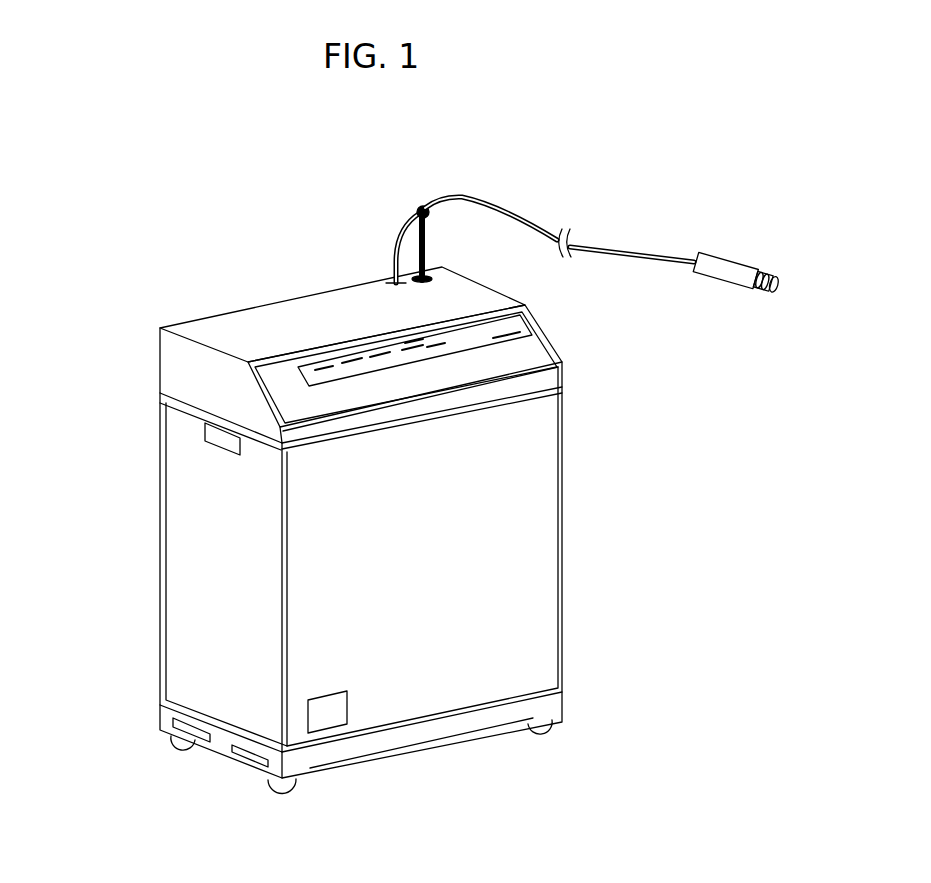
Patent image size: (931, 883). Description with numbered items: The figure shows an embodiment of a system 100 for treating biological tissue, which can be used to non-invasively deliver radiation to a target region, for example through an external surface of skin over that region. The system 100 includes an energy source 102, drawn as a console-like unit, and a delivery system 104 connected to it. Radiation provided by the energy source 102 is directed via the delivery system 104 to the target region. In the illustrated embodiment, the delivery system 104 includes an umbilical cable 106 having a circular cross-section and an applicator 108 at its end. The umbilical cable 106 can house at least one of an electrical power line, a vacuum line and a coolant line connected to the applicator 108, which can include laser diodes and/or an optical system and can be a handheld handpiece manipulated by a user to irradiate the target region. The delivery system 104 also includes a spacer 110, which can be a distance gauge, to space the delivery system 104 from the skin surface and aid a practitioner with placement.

The system 100 is at (130, 219).
The energy source 102 is at (563, 567).
The delivery system 104 is at (668, 286).
The umbilical cable 106 is at (518, 218).
The applicator 108 is at (725, 255).
The spacer 110 is at (783, 290).